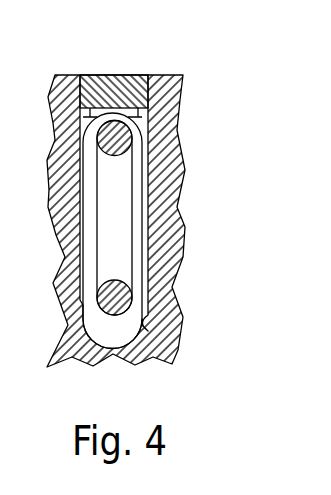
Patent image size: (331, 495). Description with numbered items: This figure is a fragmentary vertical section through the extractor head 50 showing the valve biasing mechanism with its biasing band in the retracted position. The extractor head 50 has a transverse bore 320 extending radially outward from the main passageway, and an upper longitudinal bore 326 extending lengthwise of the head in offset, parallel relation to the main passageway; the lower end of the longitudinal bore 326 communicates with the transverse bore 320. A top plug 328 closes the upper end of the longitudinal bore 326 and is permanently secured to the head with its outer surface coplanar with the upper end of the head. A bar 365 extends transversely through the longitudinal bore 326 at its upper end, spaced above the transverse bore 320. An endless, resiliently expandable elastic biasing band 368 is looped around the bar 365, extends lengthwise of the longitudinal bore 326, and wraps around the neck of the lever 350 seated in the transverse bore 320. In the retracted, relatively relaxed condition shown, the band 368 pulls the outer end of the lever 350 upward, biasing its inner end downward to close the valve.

The transverse bore 320 is at (150, 330).
The top plug 328 is at (135, 76).
The bar 365 is at (148, 128).
The elastic biasing band 368 is at (140, 207).
The upper longitudinal bore 326 is at (148, 240).
The extractor head 50 is at (120, 140).
The lever 350 is at (120, 302).